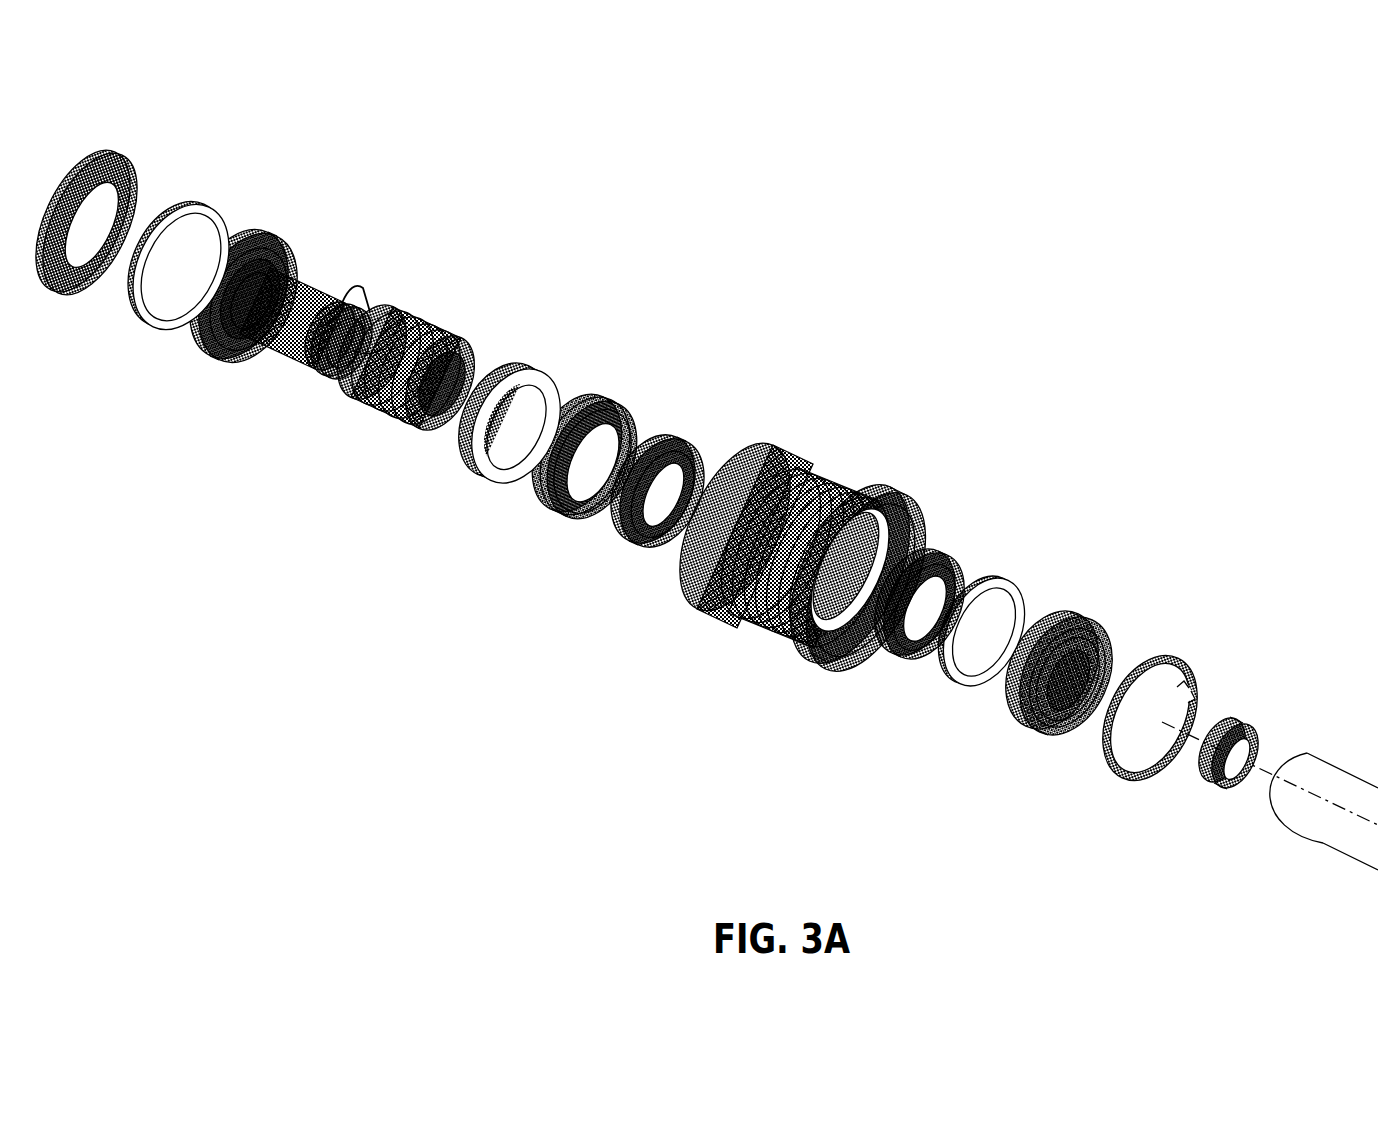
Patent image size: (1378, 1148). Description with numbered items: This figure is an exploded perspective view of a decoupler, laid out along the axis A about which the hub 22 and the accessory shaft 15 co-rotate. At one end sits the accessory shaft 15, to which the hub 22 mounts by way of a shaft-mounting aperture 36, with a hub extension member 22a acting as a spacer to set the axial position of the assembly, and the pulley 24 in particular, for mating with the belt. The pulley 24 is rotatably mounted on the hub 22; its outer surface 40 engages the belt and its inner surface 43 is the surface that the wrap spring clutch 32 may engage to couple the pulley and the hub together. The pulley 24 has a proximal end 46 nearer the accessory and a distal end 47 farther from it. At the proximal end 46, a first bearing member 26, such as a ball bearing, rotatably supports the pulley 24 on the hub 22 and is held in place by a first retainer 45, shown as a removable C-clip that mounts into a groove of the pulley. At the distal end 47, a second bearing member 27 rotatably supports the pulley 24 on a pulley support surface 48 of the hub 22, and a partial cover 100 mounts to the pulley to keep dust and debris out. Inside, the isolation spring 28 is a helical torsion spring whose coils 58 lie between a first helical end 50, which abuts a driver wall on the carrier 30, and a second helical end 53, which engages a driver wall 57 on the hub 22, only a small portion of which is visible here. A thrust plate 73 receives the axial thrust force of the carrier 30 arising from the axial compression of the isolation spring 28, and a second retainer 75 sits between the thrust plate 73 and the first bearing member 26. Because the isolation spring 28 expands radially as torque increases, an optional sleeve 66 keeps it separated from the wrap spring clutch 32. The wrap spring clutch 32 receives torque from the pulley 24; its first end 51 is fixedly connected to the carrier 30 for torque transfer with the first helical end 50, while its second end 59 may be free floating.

The partial cover 100 is at (108, 152).
The second bearing member 27 is at (197, 205).
The pulley support surface 48 is at (277, 212).
The driver wall 57 is at (273, 243).
The hub 22 is at (293, 288).
The second helical end 53 is at (325, 355).
The shaft-mounting aperture 36 is at (416, 360).
The coils 58 is at (380, 403).
The isolation spring 28 is at (386, 418).
The first helical end 50 is at (463, 340).
The sleeve 66 is at (520, 367).
The second end 59 is at (609, 378).
The wrap spring clutch 32 is at (613, 393).
The first end 51 is at (643, 420).
The carrier 30 is at (822, 500).
The distal end 47 is at (742, 425).
The pulley 24 is at (804, 549).
The outer surface 40 is at (772, 602).
The inner surface 43 is at (847, 597).
The proximal end 46 is at (942, 495).
The thrust plate 73 is at (950, 557).
The second retainer 75 is at (1003, 578).
The first bearing member 26 is at (1077, 617).
The first retainer 45 is at (1170, 653).
The hub extension member 22a is at (1229, 718).
The accessory shaft 15 is at (1328, 773).
The axis A is at (1353, 813).